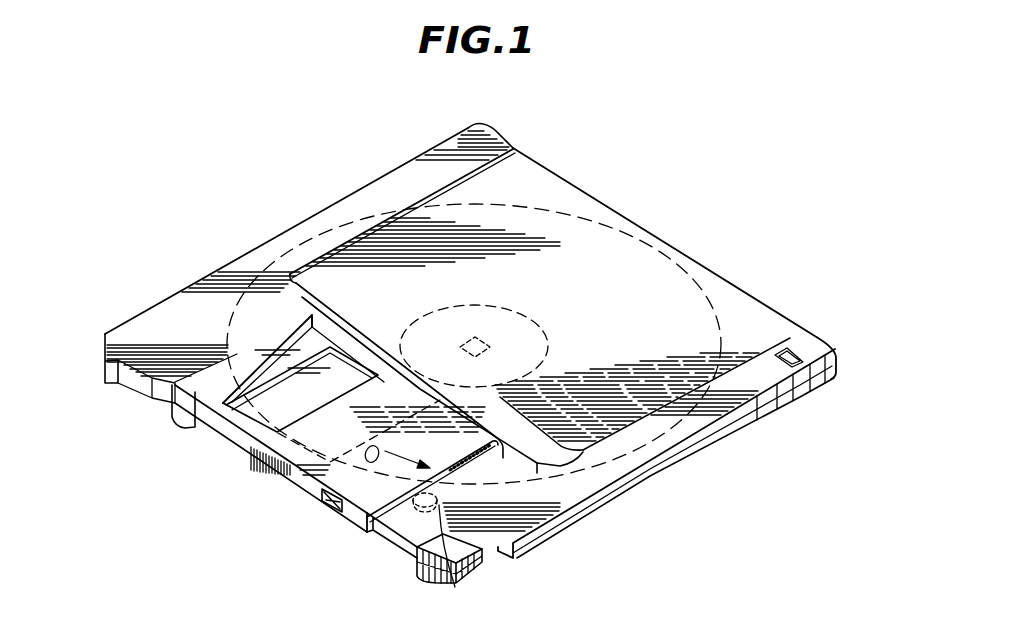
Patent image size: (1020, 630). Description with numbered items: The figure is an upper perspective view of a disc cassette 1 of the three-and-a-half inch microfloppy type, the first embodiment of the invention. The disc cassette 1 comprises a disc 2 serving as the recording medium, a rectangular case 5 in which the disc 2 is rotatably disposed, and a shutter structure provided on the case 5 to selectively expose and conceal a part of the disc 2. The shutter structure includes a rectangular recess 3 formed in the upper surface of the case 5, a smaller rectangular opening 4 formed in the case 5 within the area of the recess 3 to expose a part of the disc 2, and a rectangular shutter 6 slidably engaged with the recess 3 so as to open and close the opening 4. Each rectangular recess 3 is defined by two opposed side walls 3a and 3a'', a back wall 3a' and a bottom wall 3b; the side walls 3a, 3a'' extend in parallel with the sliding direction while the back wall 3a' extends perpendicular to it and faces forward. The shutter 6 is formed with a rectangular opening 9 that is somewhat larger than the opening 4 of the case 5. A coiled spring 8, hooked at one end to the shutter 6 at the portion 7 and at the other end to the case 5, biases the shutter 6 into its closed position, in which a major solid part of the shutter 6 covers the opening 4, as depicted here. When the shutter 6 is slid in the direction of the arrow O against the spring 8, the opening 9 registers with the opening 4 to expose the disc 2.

The disc cassette 1 is at (673, 210).
The disc 2 is at (584, 217).
The rectangular recess 3 is at (515, 458).
The bottom wall 3b is at (530, 385).
The side wall 3a is at (171, 404).
The back wall 3a' is at (620, 481).
The side wall 3a'' is at (512, 493).
The rectangular opening 4 is at (298, 290).
The rectangular case 5 is at (332, 200).
The rectangular shutter 6 is at (252, 451).
The portion 7 is at (336, 508).
The coiled spring 8 is at (381, 497).
The rectangular opening 9 is at (274, 387).